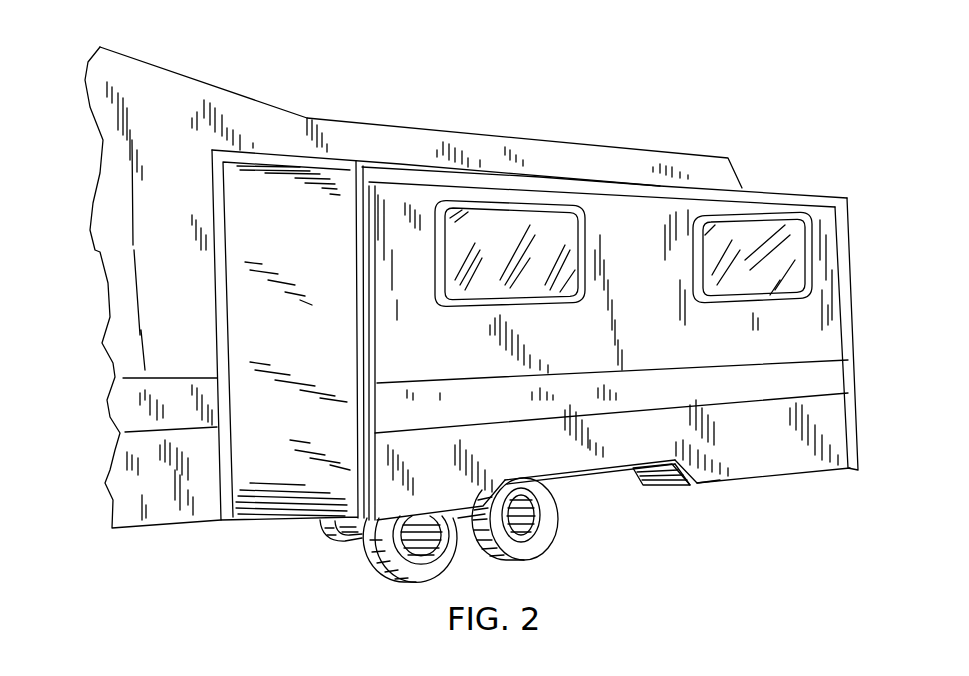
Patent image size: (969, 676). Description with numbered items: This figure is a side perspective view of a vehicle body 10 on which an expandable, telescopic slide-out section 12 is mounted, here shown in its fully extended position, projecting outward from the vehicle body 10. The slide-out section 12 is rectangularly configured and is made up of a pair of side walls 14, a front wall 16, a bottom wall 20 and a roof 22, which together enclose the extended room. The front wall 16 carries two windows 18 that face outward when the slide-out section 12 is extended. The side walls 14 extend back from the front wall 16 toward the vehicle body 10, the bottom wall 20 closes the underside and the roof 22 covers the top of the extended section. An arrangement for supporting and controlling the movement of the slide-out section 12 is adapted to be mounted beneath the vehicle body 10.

The vehicle body 10 is at (577, 110).
The slide-out section 12 is at (810, 189).
The side walls 14 is at (295, 468).
The front wall 16 is at (650, 385).
The windows 18 is at (583, 305).
The bottom wall 20 is at (758, 480).
The roof 22 is at (452, 167).